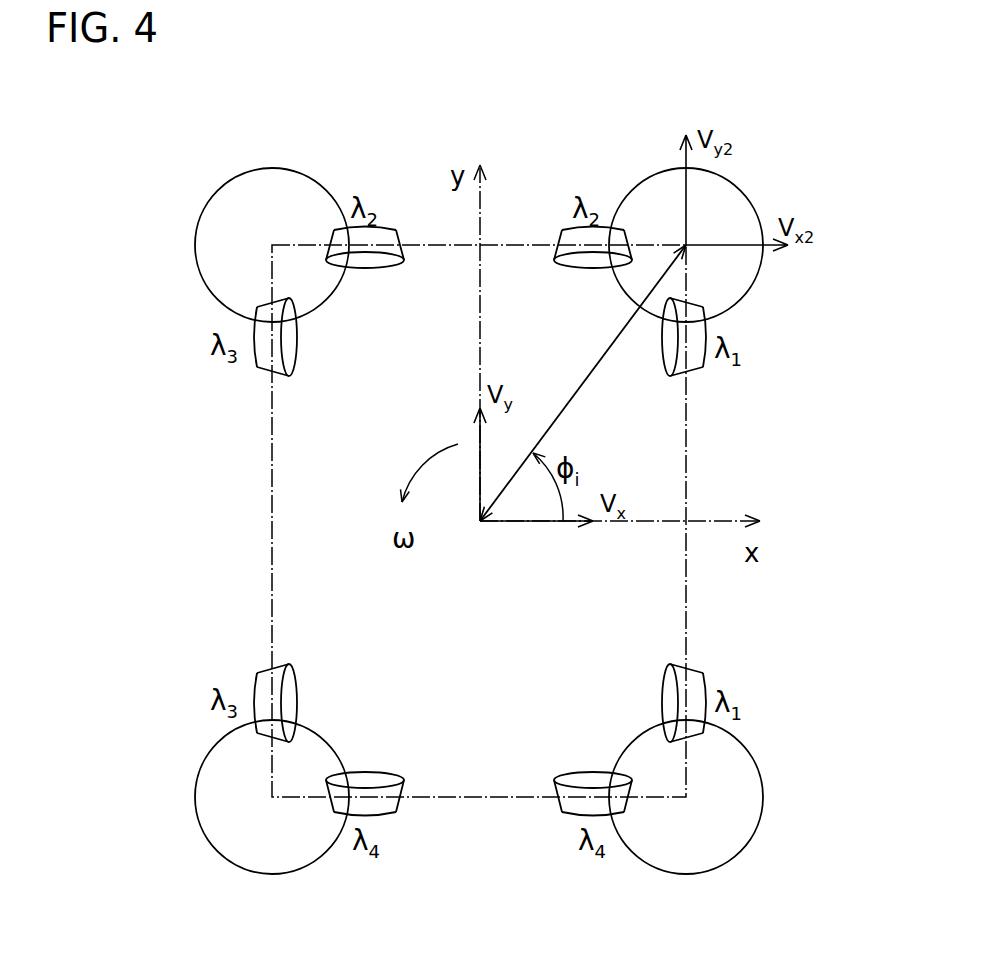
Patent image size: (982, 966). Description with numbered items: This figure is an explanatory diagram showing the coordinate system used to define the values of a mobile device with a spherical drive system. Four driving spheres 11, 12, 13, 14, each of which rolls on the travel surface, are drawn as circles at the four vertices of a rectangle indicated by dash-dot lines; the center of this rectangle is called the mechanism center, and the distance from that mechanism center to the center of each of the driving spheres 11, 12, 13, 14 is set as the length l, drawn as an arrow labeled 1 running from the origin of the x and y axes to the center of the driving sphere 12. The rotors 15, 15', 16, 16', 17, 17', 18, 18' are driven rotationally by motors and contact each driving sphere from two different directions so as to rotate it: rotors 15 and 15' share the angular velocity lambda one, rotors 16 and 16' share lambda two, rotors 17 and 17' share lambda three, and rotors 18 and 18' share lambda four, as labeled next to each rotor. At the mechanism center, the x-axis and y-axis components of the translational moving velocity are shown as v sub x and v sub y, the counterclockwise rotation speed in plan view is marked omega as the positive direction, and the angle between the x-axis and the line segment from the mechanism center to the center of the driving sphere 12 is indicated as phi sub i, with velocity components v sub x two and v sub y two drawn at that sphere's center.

The distance from mechanism center to driving sphere center 1 is at (583, 383).
The driving sphere 11 is at (705, 850).
The driving sphere 12 is at (728, 200).
The driving sphere 13 is at (255, 190).
The driving sphere 14 is at (253, 847).
The rotor 15 is at (721, 684).
The rotor 15' is at (721, 358).
The rotor 16 is at (575, 205).
The rotor 16' is at (385, 205).
The rotor 17 is at (235, 358).
The rotor 17' is at (237, 684).
The rotor 18 is at (377, 842).
The rotor 18' is at (580, 842).